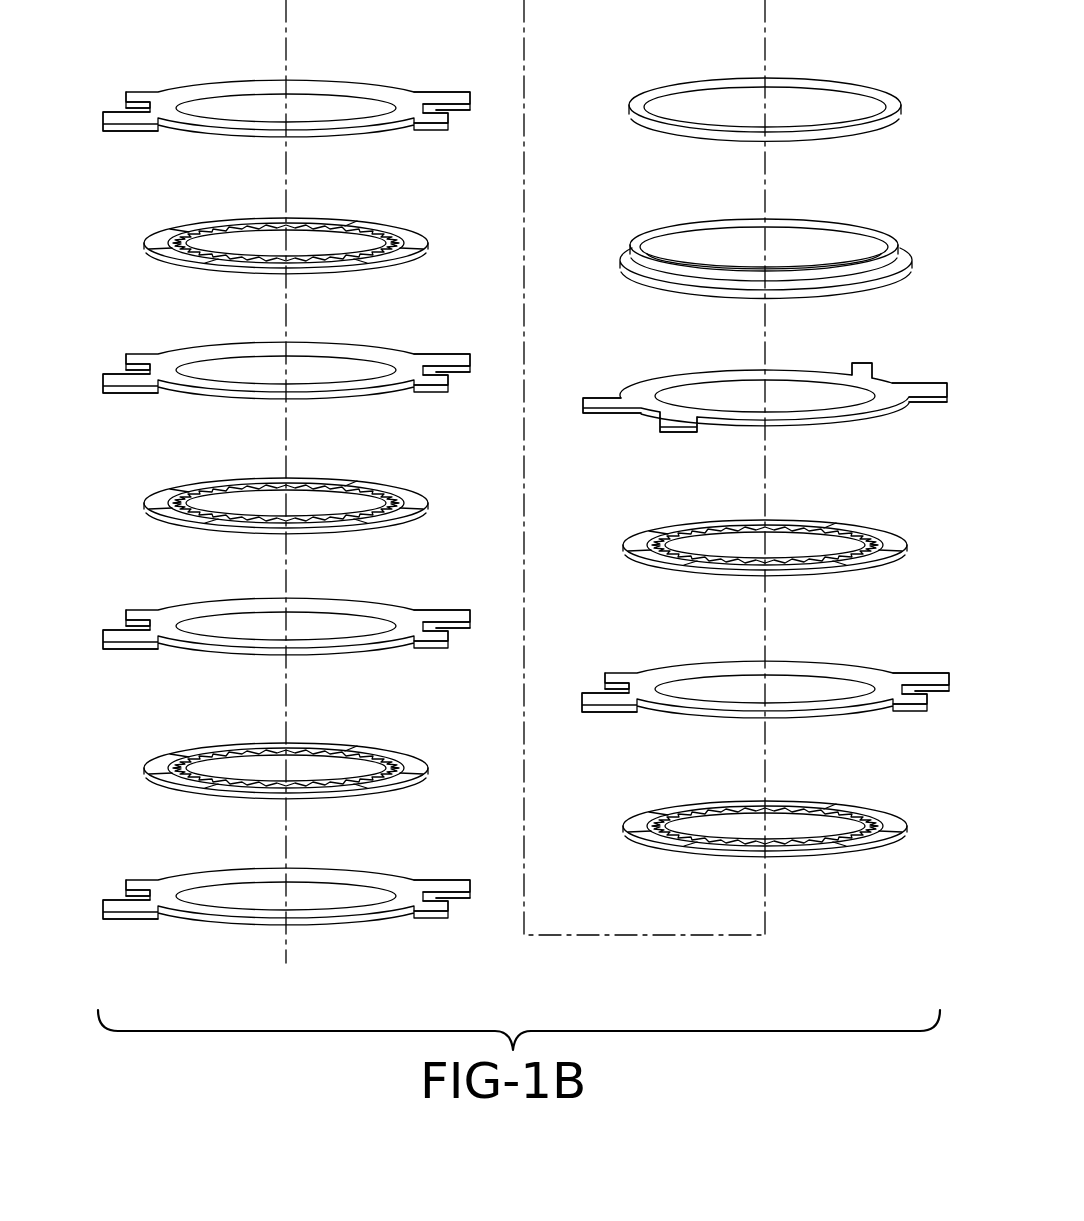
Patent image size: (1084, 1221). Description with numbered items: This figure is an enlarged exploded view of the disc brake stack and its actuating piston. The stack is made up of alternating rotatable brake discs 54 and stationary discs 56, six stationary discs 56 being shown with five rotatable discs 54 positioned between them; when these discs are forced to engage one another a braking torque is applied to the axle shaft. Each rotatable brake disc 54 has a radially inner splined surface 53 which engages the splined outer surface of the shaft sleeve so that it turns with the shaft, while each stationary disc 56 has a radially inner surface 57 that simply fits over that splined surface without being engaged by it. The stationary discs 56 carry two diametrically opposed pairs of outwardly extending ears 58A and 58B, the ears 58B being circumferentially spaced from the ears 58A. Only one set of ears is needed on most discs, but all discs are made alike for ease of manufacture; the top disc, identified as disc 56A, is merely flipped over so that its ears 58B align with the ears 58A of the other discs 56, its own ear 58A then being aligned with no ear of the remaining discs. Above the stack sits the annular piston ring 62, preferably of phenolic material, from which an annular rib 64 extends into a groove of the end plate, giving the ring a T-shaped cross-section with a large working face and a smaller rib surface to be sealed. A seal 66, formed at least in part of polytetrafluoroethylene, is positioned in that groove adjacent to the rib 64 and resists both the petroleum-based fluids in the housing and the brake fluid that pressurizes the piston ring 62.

The radially inner splined surface 53 is at (489, 530).
The rotatable brake disc 54 is at (555, 530).
The stationary disc 56 is at (526, 531).
The flipped stationary disc 56A is at (765, 426).
The radially inner surface 57 is at (525, 475).
The ears 58A is at (529, 512).
The ears 58B is at (527, 512).
The annular piston ring 62 is at (781, 247).
The annular rib 64 is at (748, 239).
The seal 66 is at (749, 96).